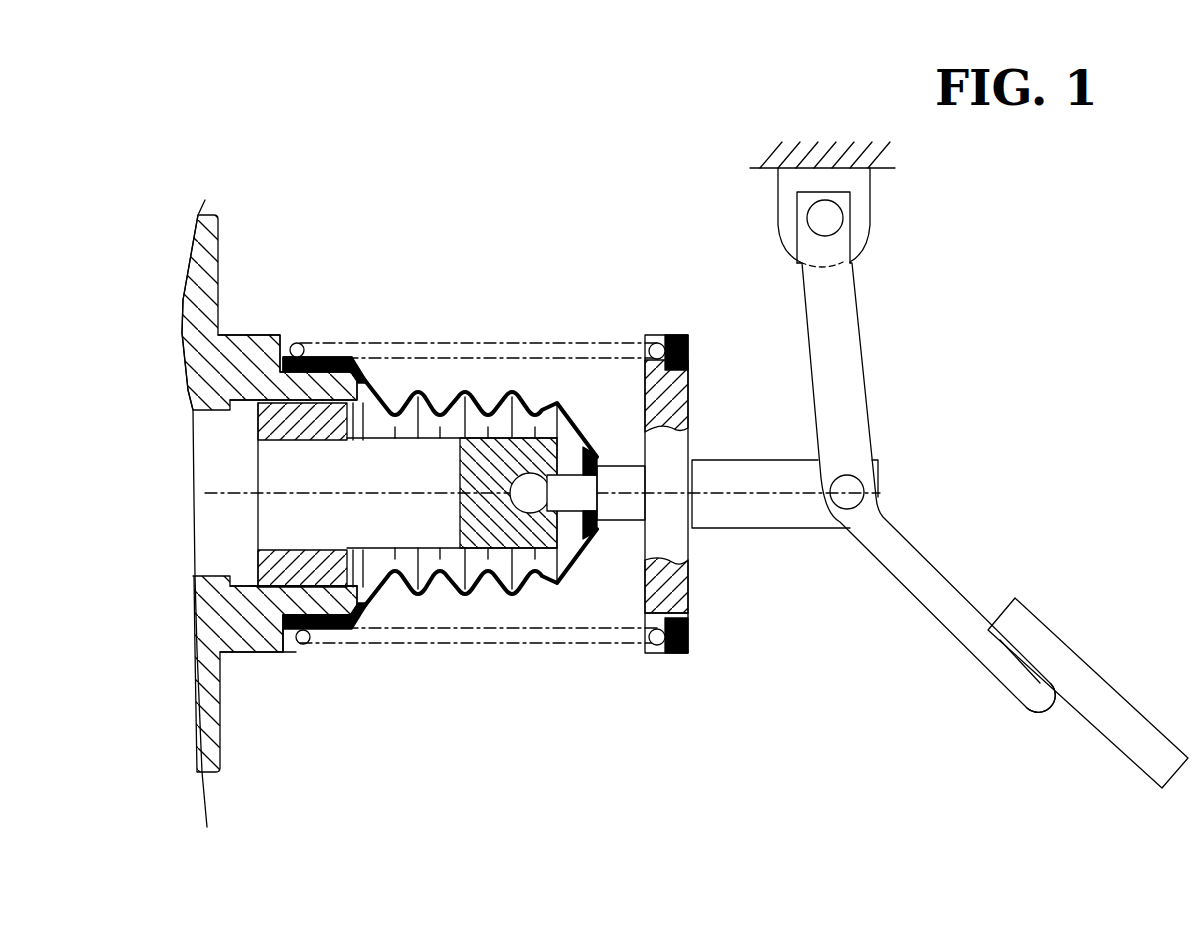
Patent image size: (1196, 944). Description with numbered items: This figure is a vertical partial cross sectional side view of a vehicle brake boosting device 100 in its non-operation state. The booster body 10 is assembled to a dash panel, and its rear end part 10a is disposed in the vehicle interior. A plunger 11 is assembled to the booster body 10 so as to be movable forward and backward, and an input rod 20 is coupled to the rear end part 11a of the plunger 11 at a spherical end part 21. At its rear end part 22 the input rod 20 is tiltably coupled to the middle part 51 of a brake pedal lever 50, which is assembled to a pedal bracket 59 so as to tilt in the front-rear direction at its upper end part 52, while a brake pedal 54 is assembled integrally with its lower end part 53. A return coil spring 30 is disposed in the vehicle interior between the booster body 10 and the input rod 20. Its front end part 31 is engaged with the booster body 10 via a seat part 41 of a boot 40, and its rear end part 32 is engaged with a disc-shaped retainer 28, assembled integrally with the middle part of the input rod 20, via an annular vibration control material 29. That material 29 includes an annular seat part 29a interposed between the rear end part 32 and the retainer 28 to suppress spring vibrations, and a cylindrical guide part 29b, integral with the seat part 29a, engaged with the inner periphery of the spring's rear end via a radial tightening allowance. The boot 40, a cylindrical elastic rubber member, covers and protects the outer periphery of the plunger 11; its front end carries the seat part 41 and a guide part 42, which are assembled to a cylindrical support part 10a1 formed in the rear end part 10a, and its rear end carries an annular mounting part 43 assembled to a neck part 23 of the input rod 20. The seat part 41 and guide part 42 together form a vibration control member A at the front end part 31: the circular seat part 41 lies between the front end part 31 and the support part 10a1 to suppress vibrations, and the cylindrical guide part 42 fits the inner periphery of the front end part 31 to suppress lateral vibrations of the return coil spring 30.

The booster body 10 is at (210, 215).
The rear end part 10a is at (252, 345).
The cylindrical support part 10a1 is at (297, 600).
The plunger 11 is at (223, 537).
The rear end part 11a is at (498, 550).
The brake boosting device 100 is at (460, 273).
The input rod 20 is at (766, 470).
The spherical end part 21 is at (532, 515).
The rear end part 22 is at (880, 472).
The neck part 23 is at (585, 503).
The retainer 28 is at (670, 420).
The annular vibration control material 29 is at (685, 356).
The annular seat part 29a is at (666, 656).
The cylindrical guide part 29b is at (648, 603).
The return coil spring 30 is at (567, 345).
The front end part 31 is at (298, 342).
The rear end part 32 is at (653, 340).
The boot 40 is at (553, 402).
The seat part 41 is at (288, 655).
The guide part 42 is at (310, 645).
The annular mounting part 43 is at (591, 452).
The brake pedal lever 50 is at (862, 368).
The middle part 51 is at (865, 512).
The upper end part 52 is at (843, 245).
The lower end part 53 is at (1046, 712).
The brake pedal 54 is at (1105, 688).
The pedal bracket 59 is at (770, 172).
The vibration control member A is at (335, 350).